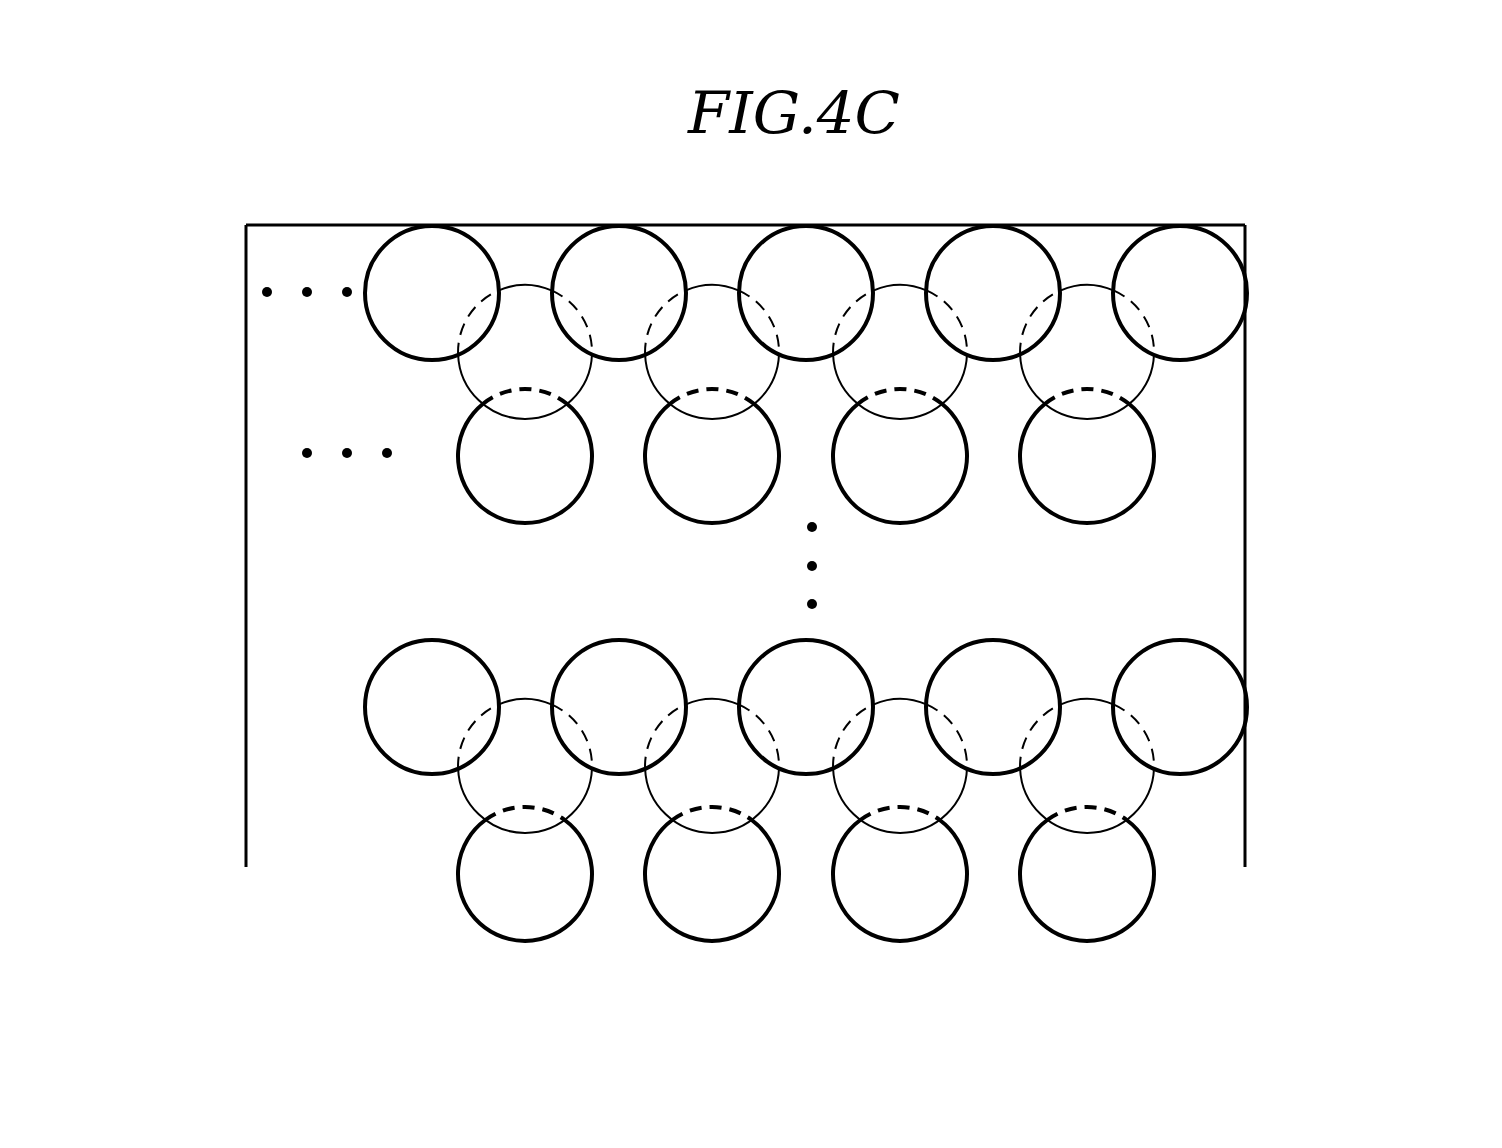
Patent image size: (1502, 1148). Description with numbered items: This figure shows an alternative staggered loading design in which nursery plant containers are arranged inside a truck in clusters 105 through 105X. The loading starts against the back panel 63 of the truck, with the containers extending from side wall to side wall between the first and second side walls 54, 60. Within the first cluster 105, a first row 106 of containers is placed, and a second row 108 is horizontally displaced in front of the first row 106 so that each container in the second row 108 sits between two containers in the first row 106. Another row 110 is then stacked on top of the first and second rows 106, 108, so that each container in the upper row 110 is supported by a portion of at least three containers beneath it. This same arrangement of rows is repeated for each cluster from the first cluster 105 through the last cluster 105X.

The first side wall 54 is at (1245, 557).
The second side wall 60 is at (246, 366).
The back panel 63 is at (330, 225).
The cluster 105 is at (919, 345).
The cluster 105X is at (1362, 638).
The first row 106 is at (1230, 248).
The second row 108 is at (1147, 378).
The row 110 is at (1085, 283).